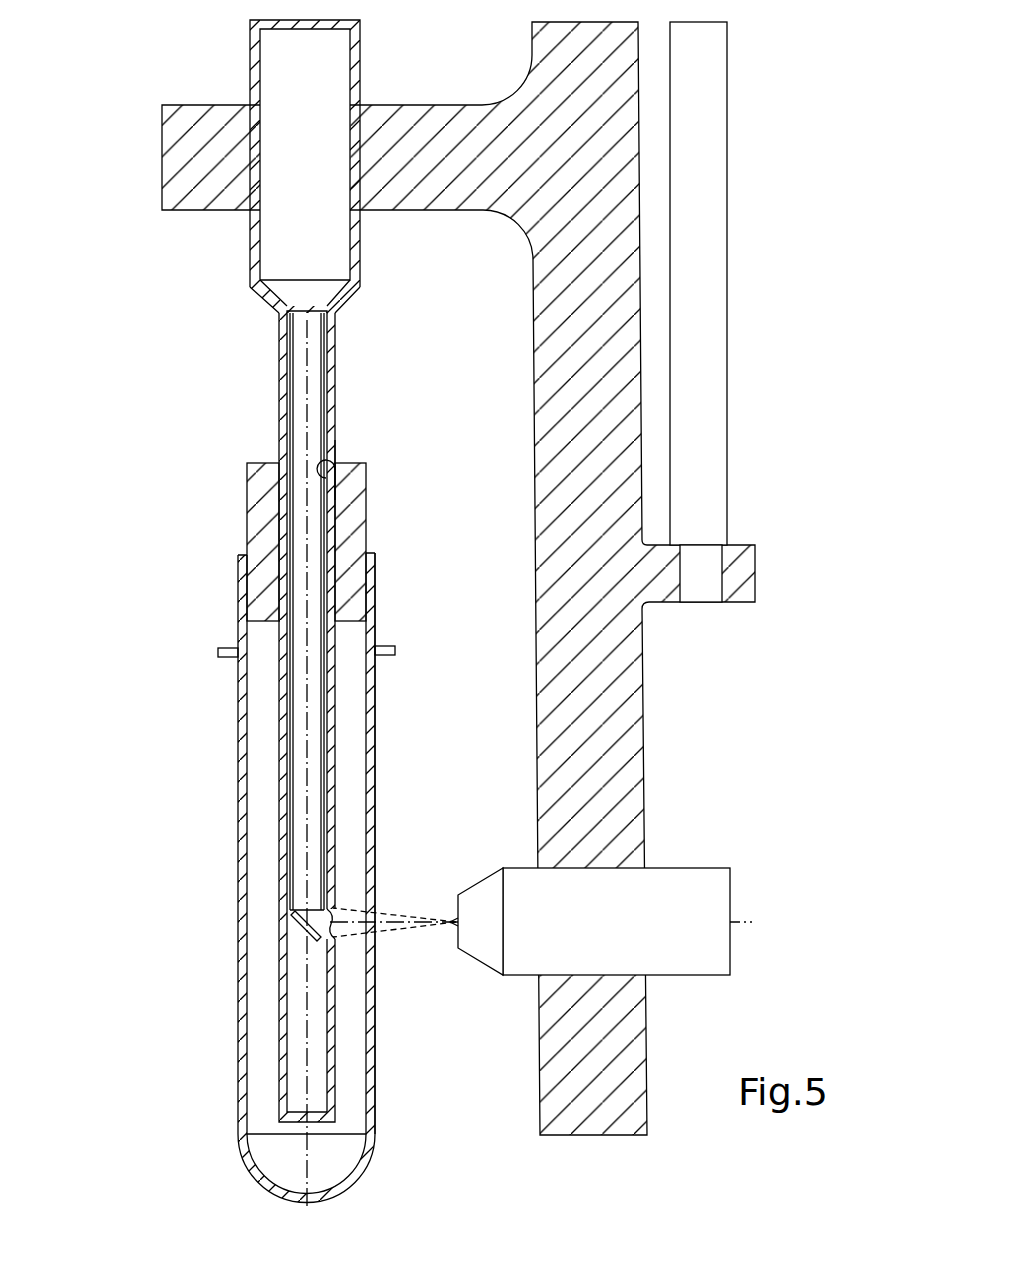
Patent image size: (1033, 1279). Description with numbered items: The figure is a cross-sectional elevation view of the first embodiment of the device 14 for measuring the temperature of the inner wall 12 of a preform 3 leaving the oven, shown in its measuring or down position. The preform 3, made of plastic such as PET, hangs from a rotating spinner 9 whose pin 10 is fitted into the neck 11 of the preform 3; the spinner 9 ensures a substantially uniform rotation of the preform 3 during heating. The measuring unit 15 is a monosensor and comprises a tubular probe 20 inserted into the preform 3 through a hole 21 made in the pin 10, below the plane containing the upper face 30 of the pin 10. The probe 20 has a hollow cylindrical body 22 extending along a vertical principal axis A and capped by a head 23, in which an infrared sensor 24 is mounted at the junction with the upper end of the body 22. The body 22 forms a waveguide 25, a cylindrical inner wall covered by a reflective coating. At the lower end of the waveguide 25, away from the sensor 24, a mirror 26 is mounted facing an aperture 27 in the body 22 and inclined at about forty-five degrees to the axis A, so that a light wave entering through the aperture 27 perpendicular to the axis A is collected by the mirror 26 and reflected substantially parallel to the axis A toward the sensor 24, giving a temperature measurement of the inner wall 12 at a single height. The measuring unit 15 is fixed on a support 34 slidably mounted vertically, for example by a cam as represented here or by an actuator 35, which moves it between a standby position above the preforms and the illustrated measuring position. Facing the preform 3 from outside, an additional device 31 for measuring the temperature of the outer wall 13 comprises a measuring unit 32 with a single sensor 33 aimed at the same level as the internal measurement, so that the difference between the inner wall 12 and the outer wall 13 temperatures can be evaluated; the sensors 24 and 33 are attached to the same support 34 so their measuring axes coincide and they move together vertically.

The device for measuring the temperature of the inner wall 14 is at (165, 265).
The measuring unit 15 is at (304, 165).
The head 23 is at (362, 252).
The infrared sensor 24 is at (330, 295).
The waveguide 25 is at (290, 376).
The tubular probe 20 is at (266, 716).
The hole 21 is at (332, 466).
The hollow cylindrical body 22 is at (279, 763).
The upper face 30 is at (256, 462).
The spinner 9 is at (400, 542).
The pin 10 is at (366, 492).
The neck 11 is at (375, 572).
The preform 3 is at (386, 692).
The inner wall 12 is at (363, 762).
The outer wall 13 is at (377, 808).
The principal axis A is at (307, 839).
The mirror 26 is at (300, 928).
The aperture 27 is at (347, 930).
The additional device 31 is at (630, 908).
The measuring unit 32 is at (630, 908).
The sensor 33 is at (518, 968).
The support 34 is at (645, 680).
The actuator 35 is at (736, 314).